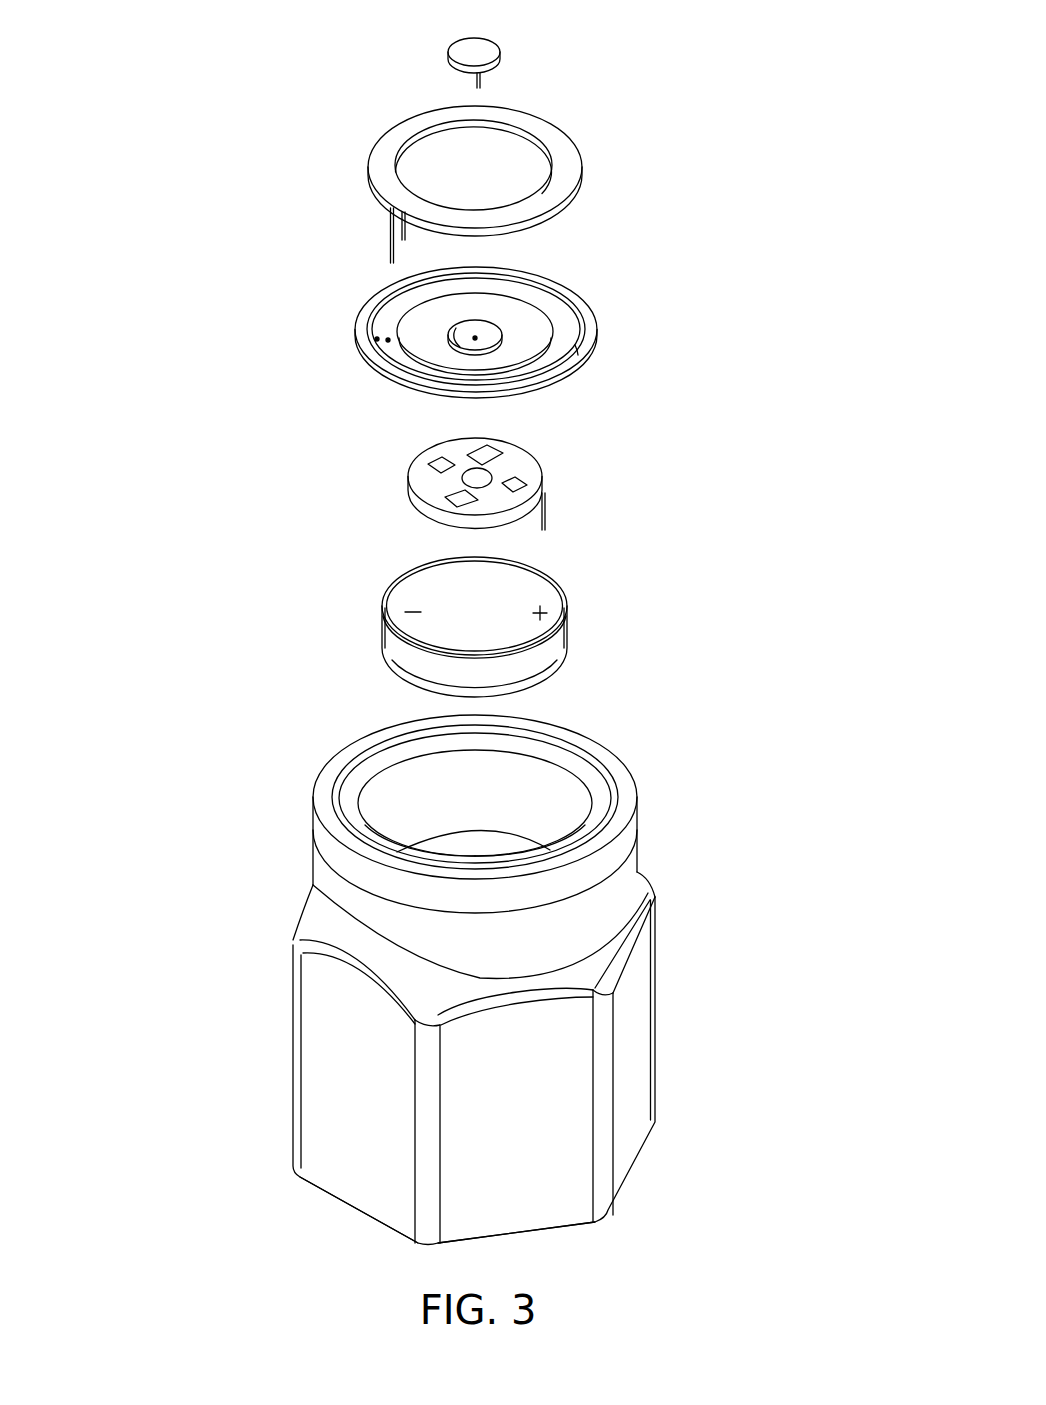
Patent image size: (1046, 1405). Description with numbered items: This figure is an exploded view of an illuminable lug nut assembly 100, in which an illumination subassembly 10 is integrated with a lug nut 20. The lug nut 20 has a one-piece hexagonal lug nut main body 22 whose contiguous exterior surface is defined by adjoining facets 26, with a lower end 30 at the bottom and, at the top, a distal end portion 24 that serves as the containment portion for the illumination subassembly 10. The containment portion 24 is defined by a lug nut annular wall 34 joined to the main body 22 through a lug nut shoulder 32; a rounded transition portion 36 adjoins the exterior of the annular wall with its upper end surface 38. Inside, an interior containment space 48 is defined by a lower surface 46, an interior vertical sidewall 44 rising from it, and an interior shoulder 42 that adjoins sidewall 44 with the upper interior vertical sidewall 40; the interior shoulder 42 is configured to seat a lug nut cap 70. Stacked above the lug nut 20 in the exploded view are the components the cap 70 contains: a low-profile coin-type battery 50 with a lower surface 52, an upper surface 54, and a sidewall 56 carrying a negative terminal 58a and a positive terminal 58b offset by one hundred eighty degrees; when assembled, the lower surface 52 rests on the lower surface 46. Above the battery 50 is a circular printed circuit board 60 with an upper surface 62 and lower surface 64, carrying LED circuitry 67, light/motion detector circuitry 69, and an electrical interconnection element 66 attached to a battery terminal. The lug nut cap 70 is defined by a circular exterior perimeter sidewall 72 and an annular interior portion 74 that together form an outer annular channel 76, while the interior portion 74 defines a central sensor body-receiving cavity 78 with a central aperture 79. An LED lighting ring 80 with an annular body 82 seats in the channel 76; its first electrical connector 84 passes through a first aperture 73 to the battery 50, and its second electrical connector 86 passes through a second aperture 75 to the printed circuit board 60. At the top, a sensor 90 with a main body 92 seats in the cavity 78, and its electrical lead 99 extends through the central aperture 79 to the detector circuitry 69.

The illuminable lug nut assembly 100 is at (151, 9).
The illumination subassembly 10 is at (758, 744).
The sensor 90 is at (440, 44).
The sensor main body 92 is at (483, 50).
The electrical lead 99 is at (476, 82).
The LED lighting ring 80 is at (364, 136).
The annular body 82 is at (570, 162).
The first electrical connector 84 is at (387, 220).
The second electrical connector 86 is at (403, 238).
The lug nut cap 70 is at (600, 317).
The circular exterior perimeter sidewall 72 is at (562, 292).
The annular interior portion 74 is at (488, 306).
The outer annular channel 76 is at (565, 349).
The central sensor body-receiving cavity 78 is at (472, 340).
The central aperture 79 is at (476, 338).
The second aperture 75 is at (377, 338).
The first aperture 73 is at (388, 338).
The printed circuit board 60 is at (377, 459).
The upper surface 62 is at (518, 465).
The lower surface 64 is at (510, 522).
The electrical interconnection element 66 is at (545, 508).
The LED circuitry 67 is at (458, 497).
The light/motion detector circuitry 69 is at (477, 472).
The battery 50 is at (370, 580).
The lower surface 52 is at (537, 692).
The upper surface 54 is at (458, 596).
The sidewall 56 is at (458, 692).
The negative terminal 58a is at (382, 638).
The positive terminal 58b is at (570, 640).
The lug nut 20 is at (707, 914).
The lug nut main body 22 is at (660, 1030).
The distal end portion 24 is at (644, 860).
The facets 26 is at (334, 1097).
The lower end 30 is at (565, 1228).
The lug nut shoulder 32 is at (315, 930).
The lug nut annular wall 34 is at (453, 958).
The rounded transition portion 36 is at (342, 855).
The upper end surface 38 is at (606, 813).
The interior vertical sidewall 40 is at (492, 735).
The interior shoulder 42 is at (370, 787).
The interior vertical sidewall 44 is at (457, 788).
The lower surface 46 is at (447, 848).
The interior containment space 48 is at (502, 800).